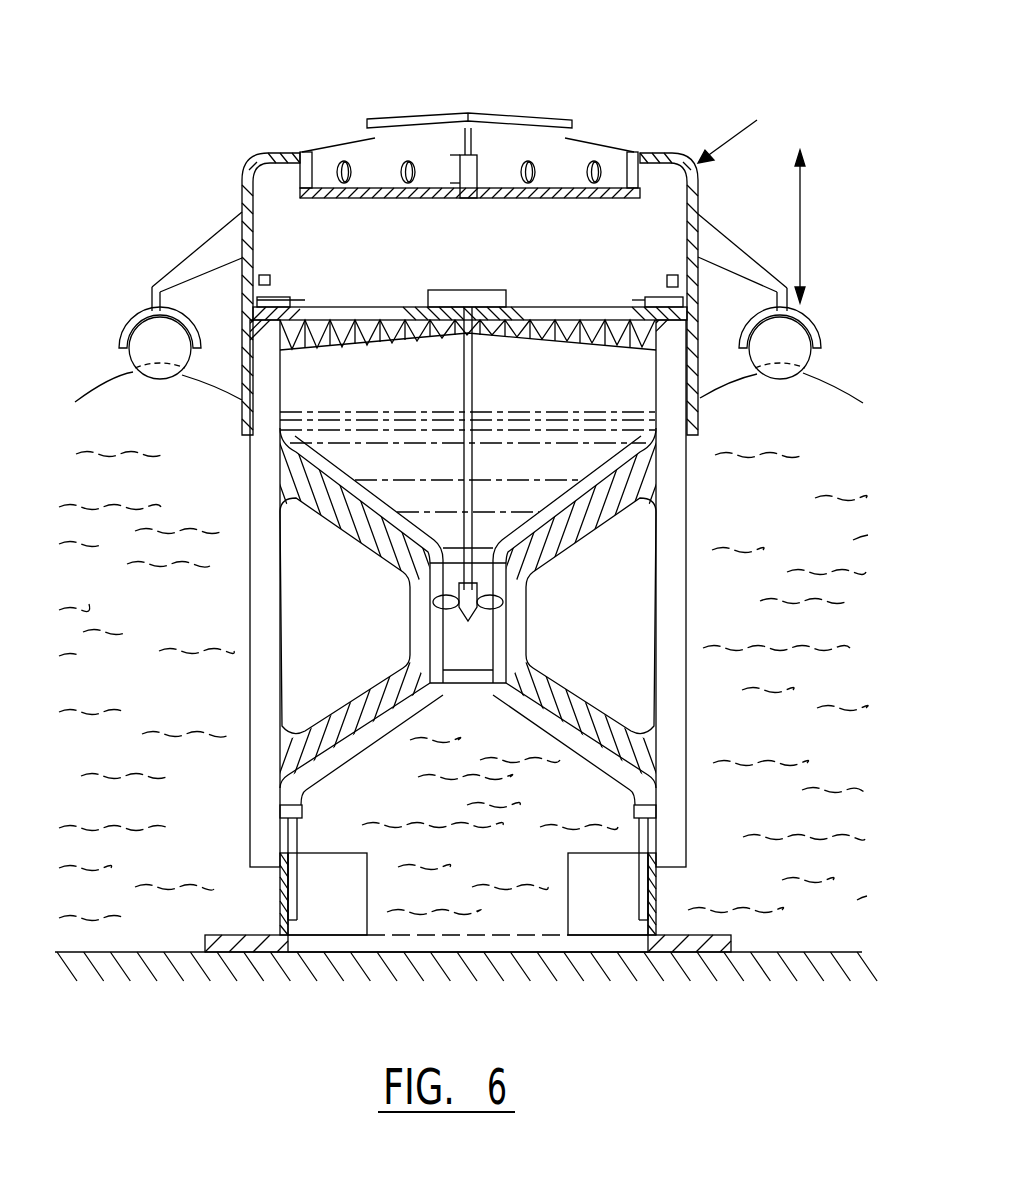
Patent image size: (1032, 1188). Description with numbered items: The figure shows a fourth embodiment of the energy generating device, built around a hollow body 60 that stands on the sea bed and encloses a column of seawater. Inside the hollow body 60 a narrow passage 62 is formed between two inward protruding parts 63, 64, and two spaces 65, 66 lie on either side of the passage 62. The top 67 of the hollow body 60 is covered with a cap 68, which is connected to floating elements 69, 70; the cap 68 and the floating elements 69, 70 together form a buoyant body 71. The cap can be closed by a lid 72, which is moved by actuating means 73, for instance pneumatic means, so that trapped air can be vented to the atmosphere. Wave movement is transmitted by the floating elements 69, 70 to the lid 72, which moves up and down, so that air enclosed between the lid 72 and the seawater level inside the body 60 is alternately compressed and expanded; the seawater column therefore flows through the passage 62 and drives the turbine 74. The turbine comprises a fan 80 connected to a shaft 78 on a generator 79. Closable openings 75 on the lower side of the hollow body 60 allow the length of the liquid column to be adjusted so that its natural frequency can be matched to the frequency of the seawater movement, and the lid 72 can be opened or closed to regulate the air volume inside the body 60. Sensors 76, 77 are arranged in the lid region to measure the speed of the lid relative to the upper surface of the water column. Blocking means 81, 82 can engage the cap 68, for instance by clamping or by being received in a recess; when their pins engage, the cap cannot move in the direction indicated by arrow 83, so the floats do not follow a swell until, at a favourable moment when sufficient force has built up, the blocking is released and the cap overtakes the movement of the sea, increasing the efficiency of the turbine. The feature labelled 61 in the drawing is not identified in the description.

The hollow body 60 is at (694, 519).
The sea bed 61 is at (128, 965).
The narrow passage 62 is at (487, 643).
The inward protruding part 63 is at (362, 730).
The inward protruding part 64 is at (558, 722).
The space 65 is at (500, 895).
The space 66 is at (531, 420).
The top 67 is at (523, 307).
The cap 68 is at (680, 152).
The floating element 69 is at (170, 360).
The floating element 70 is at (777, 377).
The buoyant body 71 is at (745, 127).
The lid 72 is at (492, 118).
The actuating means 73 is at (474, 165).
The turbine 74 is at (460, 592).
The closable openings 75 is at (337, 883).
The sensor 76 is at (262, 276).
The sensor 77 is at (673, 275).
The shaft 78 is at (465, 387).
The generator 79 is at (452, 300).
The fan 80 is at (498, 595).
The blocking means 81 is at (278, 300).
The blocking means 82 is at (656, 298).
The arrow 83 is at (800, 218).